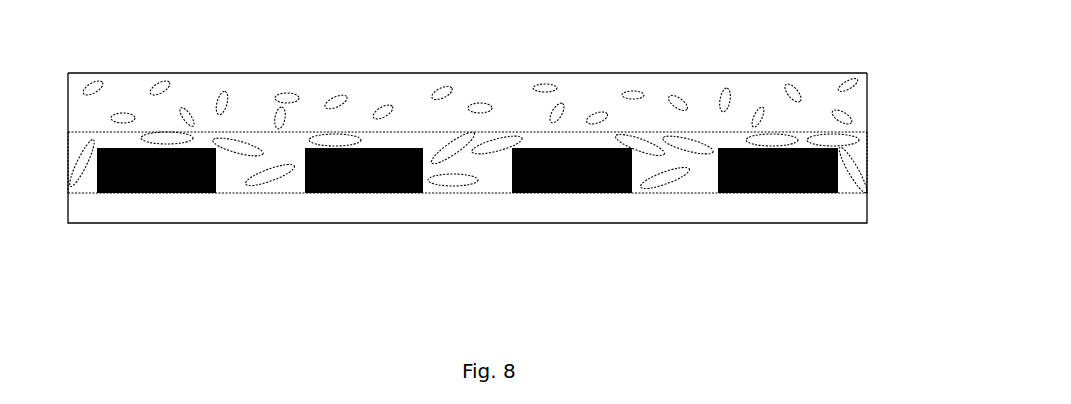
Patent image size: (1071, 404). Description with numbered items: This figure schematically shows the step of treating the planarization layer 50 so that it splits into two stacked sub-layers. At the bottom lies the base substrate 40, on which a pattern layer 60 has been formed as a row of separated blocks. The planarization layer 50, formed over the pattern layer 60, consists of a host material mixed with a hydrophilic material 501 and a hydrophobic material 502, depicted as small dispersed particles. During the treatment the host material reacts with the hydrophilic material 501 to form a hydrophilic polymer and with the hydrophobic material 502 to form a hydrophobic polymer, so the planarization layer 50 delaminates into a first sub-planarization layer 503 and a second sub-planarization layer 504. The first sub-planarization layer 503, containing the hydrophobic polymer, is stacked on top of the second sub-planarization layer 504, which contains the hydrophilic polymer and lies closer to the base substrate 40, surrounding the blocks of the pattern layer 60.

The base substrate 40 is at (815, 209).
The planarization layer 50 is at (940, 78).
The pattern layer 60 is at (572, 193).
The hydrophilic material 501 is at (442, 177).
The hydrophobic material 502 is at (633, 93).
The first sub-planarization layer 503 is at (817, 103).
The second sub-planarization layer 504 is at (850, 150).